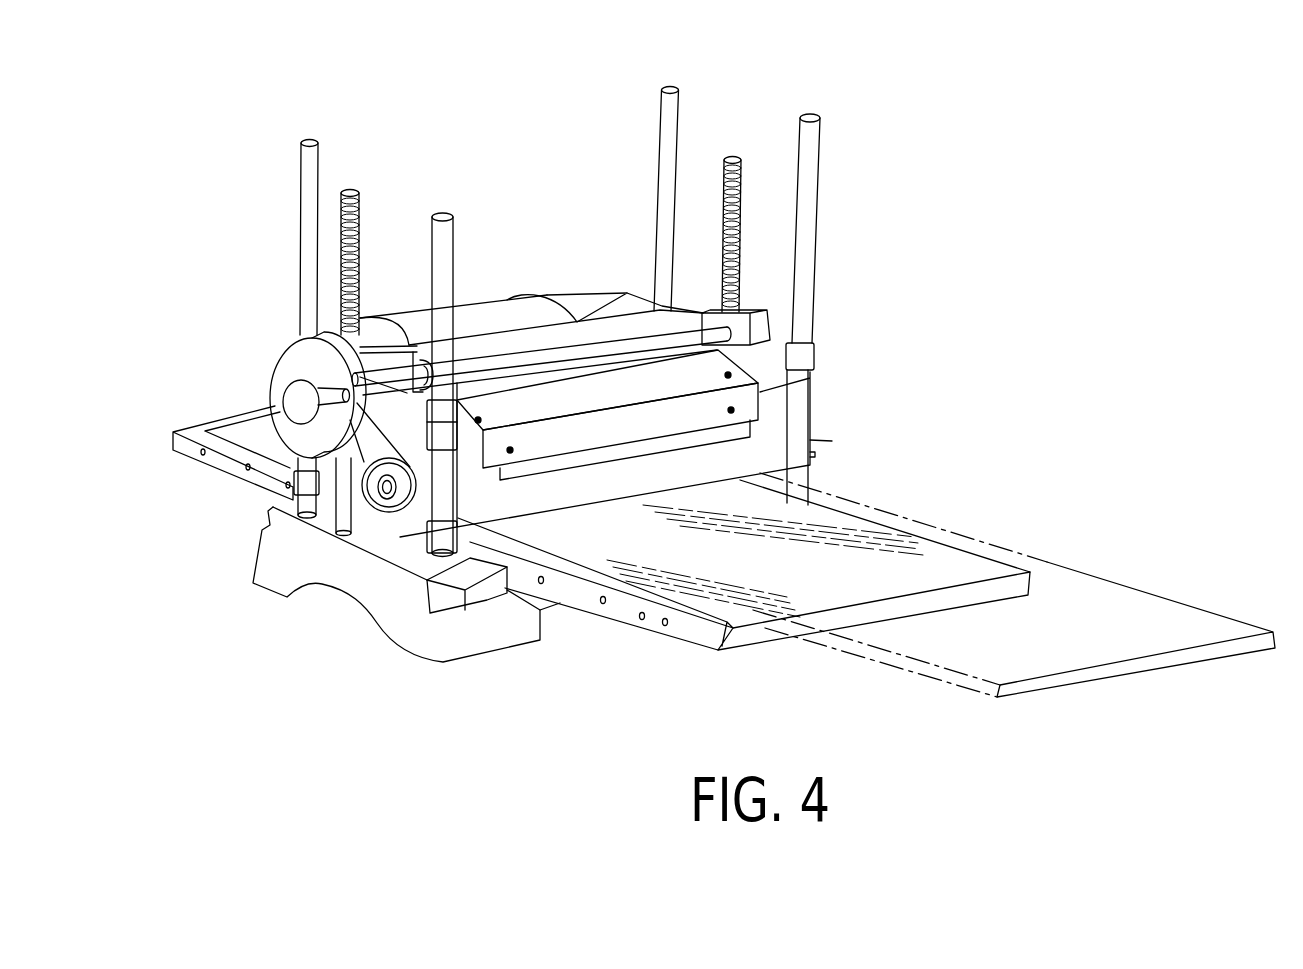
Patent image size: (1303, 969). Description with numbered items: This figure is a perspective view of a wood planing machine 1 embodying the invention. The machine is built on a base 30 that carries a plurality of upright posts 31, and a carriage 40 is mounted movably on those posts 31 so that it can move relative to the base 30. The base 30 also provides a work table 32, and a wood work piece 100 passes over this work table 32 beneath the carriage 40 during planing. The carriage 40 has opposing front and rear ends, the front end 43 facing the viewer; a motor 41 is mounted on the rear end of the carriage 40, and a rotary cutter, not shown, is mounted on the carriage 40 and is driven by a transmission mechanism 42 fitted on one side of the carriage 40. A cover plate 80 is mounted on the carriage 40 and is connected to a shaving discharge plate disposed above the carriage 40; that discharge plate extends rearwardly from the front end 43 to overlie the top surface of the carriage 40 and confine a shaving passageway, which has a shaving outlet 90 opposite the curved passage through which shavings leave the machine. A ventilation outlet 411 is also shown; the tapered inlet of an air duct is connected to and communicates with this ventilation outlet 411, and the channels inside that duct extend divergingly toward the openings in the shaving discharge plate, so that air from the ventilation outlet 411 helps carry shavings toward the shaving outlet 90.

The wood planing machine 1 is at (772, 100).
The base 30 is at (413, 656).
The upright posts 31 is at (816, 155).
The work table 32 is at (700, 633).
The carriage 40 is at (818, 437).
The motor 41 is at (515, 307).
The ventilation outlet 411 is at (590, 333).
The transmission mechanism 42 is at (367, 522).
The front end 43 is at (812, 382).
The cover plate 80 is at (740, 368).
The shaving outlet 90 is at (569, 462).
The wood work piece 100 is at (1050, 557).